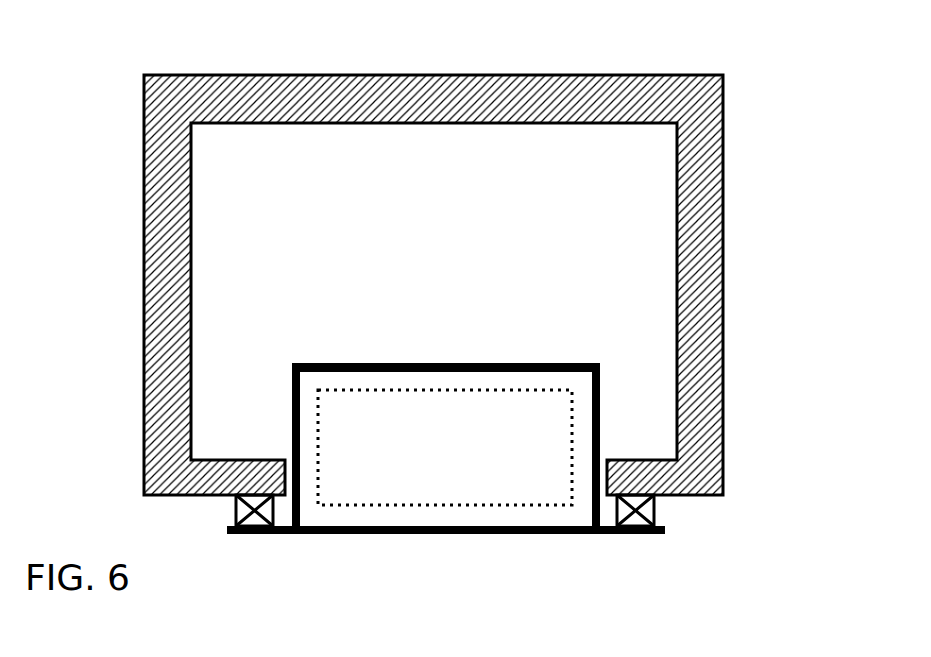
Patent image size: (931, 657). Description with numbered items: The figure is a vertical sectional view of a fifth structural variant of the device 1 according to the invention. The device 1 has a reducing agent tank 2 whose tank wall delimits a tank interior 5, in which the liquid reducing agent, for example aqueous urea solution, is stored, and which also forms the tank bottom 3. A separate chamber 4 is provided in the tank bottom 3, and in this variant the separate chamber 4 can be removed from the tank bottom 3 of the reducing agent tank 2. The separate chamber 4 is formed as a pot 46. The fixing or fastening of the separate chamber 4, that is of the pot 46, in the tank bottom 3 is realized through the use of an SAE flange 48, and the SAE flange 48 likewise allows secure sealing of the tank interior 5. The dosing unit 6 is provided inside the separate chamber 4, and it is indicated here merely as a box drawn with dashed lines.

The device 1 is at (762, 100).
The reducing agent tank 2 is at (723, 237).
The tank bottom 3 is at (665, 495).
The separate chamber 4 is at (600, 372).
The tank interior 5 is at (440, 173).
The dosing unit 6 is at (385, 388).
The pot 46 is at (412, 532).
The SAE flange 48 is at (642, 532).